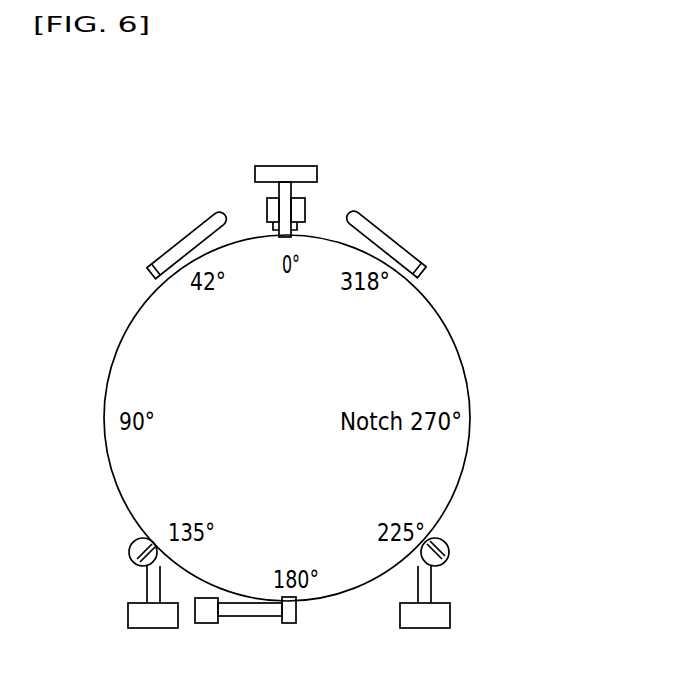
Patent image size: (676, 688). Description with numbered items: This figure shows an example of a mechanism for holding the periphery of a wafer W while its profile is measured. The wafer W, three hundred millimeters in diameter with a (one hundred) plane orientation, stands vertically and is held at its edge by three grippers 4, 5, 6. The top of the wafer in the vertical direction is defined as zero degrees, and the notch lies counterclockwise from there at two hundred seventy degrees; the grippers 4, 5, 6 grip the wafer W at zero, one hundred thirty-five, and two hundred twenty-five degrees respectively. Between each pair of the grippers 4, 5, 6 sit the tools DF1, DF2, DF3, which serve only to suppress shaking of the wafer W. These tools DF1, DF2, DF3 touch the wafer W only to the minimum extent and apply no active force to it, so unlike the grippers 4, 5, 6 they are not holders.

The wafer W is at (423, 353).
The gripper 4 is at (275, 168).
The gripper 5 is at (140, 567).
The gripper 6 is at (445, 560).
The shaking suppression tool DF1 is at (180, 242).
The shaking suppression tool DF2 is at (252, 633).
The shaking suppression tool DF3 is at (395, 242).